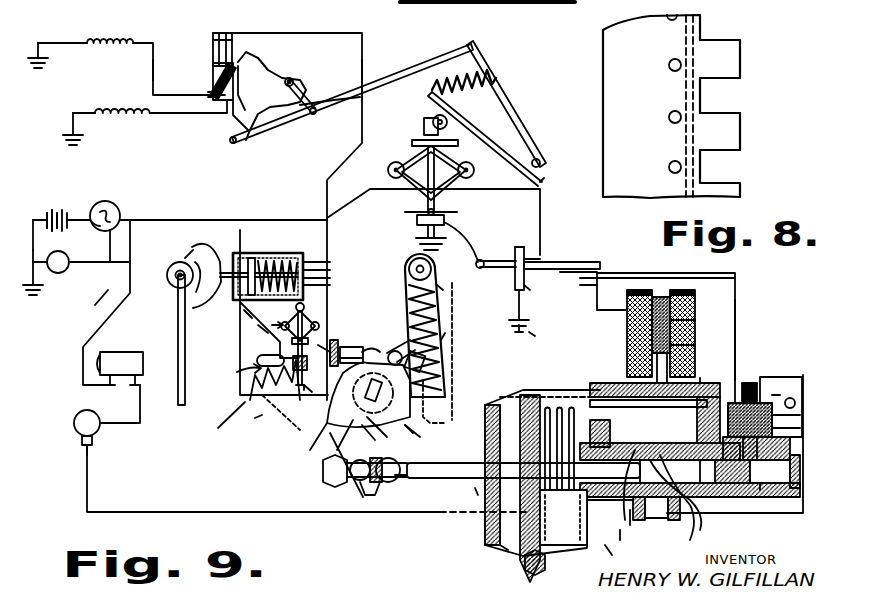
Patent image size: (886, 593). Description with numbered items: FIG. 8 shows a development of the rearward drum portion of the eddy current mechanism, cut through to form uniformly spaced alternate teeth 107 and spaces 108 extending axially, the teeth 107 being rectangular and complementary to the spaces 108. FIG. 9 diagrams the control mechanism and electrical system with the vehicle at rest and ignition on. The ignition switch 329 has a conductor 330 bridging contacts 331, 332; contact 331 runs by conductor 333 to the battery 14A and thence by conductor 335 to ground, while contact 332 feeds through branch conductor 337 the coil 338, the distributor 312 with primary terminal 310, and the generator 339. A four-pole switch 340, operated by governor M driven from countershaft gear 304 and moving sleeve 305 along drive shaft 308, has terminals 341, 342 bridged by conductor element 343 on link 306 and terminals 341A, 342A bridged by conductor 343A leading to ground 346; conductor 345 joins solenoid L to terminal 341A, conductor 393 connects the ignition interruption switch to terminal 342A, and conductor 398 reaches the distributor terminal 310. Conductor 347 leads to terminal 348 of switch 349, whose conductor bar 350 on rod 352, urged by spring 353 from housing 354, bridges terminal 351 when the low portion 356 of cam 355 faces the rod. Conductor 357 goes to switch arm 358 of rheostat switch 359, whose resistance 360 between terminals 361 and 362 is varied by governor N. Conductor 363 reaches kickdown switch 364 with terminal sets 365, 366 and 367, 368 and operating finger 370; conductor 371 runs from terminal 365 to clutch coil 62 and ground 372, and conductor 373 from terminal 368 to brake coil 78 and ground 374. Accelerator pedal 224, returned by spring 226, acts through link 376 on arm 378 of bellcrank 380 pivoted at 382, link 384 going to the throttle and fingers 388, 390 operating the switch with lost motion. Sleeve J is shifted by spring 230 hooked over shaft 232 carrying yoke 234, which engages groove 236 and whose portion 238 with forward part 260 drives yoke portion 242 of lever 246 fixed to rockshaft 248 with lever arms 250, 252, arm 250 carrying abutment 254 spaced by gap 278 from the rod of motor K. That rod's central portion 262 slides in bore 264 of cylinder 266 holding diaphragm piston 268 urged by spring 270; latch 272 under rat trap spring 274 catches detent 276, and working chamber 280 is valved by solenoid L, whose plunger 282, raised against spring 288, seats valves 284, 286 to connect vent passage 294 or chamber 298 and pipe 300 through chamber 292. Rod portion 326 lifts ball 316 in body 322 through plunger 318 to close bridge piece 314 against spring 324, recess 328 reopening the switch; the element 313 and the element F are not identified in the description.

In FIG. 8, the teeth 107 is at (725, 132).
In FIG. 8, the spaces 108 is at (717, 101).
In FIG. 9, the eddy current clutch coil 62 is at (125, 44).
In FIG. 9, the eddy current brake coil 78 is at (118, 108).
In FIG. 9, the conductor 371 is at (153, 70).
In FIG. 9, the ground 372 is at (38, 80).
In FIG. 9, the conductor 373 is at (153, 114).
In FIG. 9, the ground 374 is at (73, 148).
In FIG. 9, the terminal 366 is at (258, 22).
In FIG. 9, the terminal 367 is at (215, 40).
In FIG. 9, the two position double pole snap switch 364 is at (213, 62).
In FIG. 9, the conductor 363 is at (213, 77).
In FIG. 9, the terminal 365 is at (213, 98).
In FIG. 9, the terminal 368 is at (226, 105).
In FIG. 9, the operating finger 370 is at (232, 106).
In FIG. 9, the operating finger 390 is at (290, 53).
In FIG. 9, the bellcrank 380 is at (305, 64).
In FIG. 9, the pivot 382 is at (294, 82).
In FIG. 9, the arm 378 is at (312, 102).
In FIG. 9, the operating finger 388 is at (237, 141).
In FIG. 9, the link 384 is at (296, 120).
In FIG. 9, the accelerator pedal 224 is at (515, 120).
In FIG. 9, the spring 226 is at (492, 84).
In FIG. 9, the countershaft gear 304 is at (440, 116).
In FIG. 9, the link 376 is at (424, 123).
In FIG. 9, the drive shaft 308 is at (424, 141).
In FIG. 9, the governor M is at (410, 151).
In FIG. 9, the sleeve 305 is at (430, 222).
In FIG. 9, the battery 14A is at (50, 209).
In FIG. 9, the conductor 335 is at (33, 220).
In FIG. 9, the conductor 333 is at (68, 214).
In FIG. 9, the contact 332 is at (113, 205).
In FIG. 9, the conductor 330 is at (126, 220).
In FIG. 9, the contact 331 is at (92, 222).
In FIG. 9, the ignition switch 329 is at (110, 232).
In FIG. 9, the generator 339 is at (60, 273).
In FIG. 9, the branch conductor 337 is at (105, 325).
In FIG. 9, the coil 338 is at (128, 352).
In FIG. 9, the distributor 312 is at (92, 424).
In FIG. 9, the primary terminal 310 is at (90, 448).
In FIG. 9, the conductor 398 is at (297, 512).
In FIG. 9, the cam 355 is at (177, 268).
In FIG. 9, the governor N is at (185, 348).
In FIG. 9, the conductor 347 is at (225, 246).
In FIG. 9, the terminal 348 is at (285, 256).
In FIG. 9, the conductor bar 350 is at (268, 252).
In FIG. 9, the terminal 351 is at (252, 302).
In FIG. 9, the spring 353 is at (303, 262).
In FIG. 9, the insulated switch housing 354 is at (304, 270).
In FIG. 9, the rod 352 is at (304, 285).
In FIG. 9, the switch 349 is at (240, 314).
In FIG. 9, the low portion 356 is at (242, 318).
In FIG. 9, the conductor 357 is at (262, 332).
In FIG. 9, the movable switch arm 358 is at (262, 355).
In FIG. 9, the terminal 361 is at (232, 372).
In FIG. 9, the gear F is at (211, 382).
In FIG. 9, the rheostat switch 359 is at (226, 426).
In FIG. 9, the variable resistance 360 is at (258, 416).
In FIG. 9, the terminal 362 is at (304, 385).
In FIG. 9, the upstanding lever 246 is at (334, 368).
In FIG. 9, the shift groove 236 is at (318, 345).
In FIG. 9, the forwardly extending portion 238 is at (340, 358).
In FIG. 9, the yoke portion 242 is at (343, 365).
In FIG. 9, the forward portion 260 is at (350, 362).
In FIG. 9, the spring 230 is at (441, 345).
In FIG. 9, the shaft 232 is at (438, 272).
In FIG. 9, the shift yoke 234 is at (443, 286).
In FIG. 9, the sleeve J is at (443, 333).
In FIG. 9, the four-pole switch 340 is at (478, 232).
In FIG. 9, the link 306 is at (490, 262).
In FIG. 9, the terminal 341 is at (524, 250).
In FIG. 9, the conductor element 343 is at (519, 247).
In FIG. 9, the terminal 342 is at (526, 260).
In FIG. 9, the terminal 342A is at (535, 264).
In FIG. 9, the conductor 343A is at (516, 310).
In FIG. 9, the terminal 341A is at (526, 290).
In FIG. 9, the conductor 345 is at (531, 336).
In FIG. 9, the ground 346 is at (520, 338).
In FIG. 9, the solenoid L is at (683, 290).
In FIG. 9, the conductor 393 is at (737, 290).
In FIG. 9, the armature plunger 282 is at (696, 305).
In FIG. 9, the spring 288 is at (660, 296).
In FIG. 9, the valving port 284 is at (696, 335).
In FIG. 9, the valving port 286 is at (696, 350).
In FIG. 9, the vent passage 294 is at (618, 383).
In FIG. 9, the chamber 292 is at (620, 397).
In FIG. 9, the spring 324 is at (750, 383).
In FIG. 9, the valve box 313 is at (800, 388).
In FIG. 9, the bridge piece 314 is at (789, 400).
In FIG. 9, the ball 316 is at (790, 420).
In FIG. 9, the body 322 is at (790, 437).
In FIG. 9, the plunger 318 is at (790, 455).
In FIG. 9, the latch 272 is at (691, 444).
In FIG. 9, the enlarged central portion 262 is at (523, 471).
In FIG. 9, the recess 328 is at (705, 482).
In FIG. 9, the chamber 298 is at (700, 510).
In FIG. 9, the pipe 300 is at (662, 540).
In FIG. 9, the portion 326 is at (760, 490).
In FIG. 9, the detent 276 is at (630, 525).
In FIG. 9, the bore 264 is at (620, 540).
In FIG. 9, the working chamber 280 is at (610, 555).
In FIG. 9, the pressure fluid operated motor K is at (485, 545).
In FIG. 9, the spring 270 is at (537, 400).
In FIG. 9, the rat trap spring 274 is at (563, 517).
In FIG. 9, the cylinder 266 is at (540, 575).
In FIG. 9, the piston 268 is at (500, 550).
In FIG. 9, the gap 278 is at (405, 480).
In FIG. 9, the adjustable abutment 254 is at (340, 487).
In FIG. 9, the lever arm 250 is at (345, 410).
In FIG. 9, the rockshaft 248 is at (375, 440).
In FIG. 9, the lever arm 252 is at (420, 437).